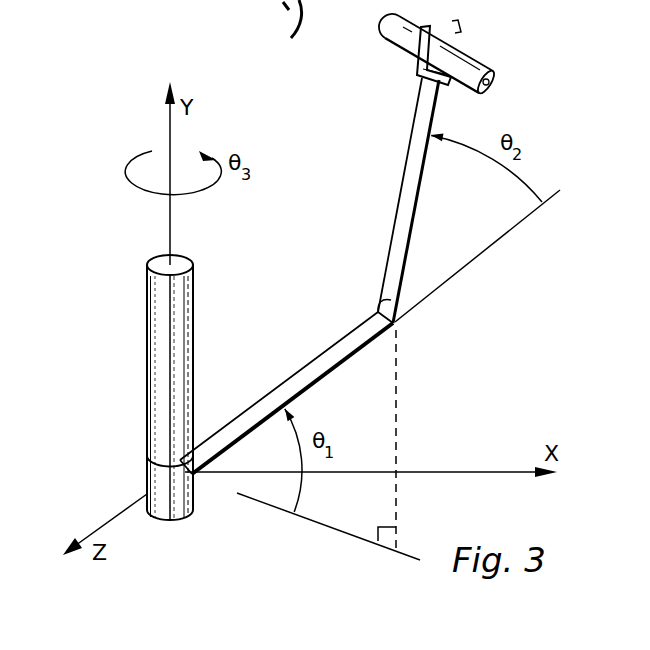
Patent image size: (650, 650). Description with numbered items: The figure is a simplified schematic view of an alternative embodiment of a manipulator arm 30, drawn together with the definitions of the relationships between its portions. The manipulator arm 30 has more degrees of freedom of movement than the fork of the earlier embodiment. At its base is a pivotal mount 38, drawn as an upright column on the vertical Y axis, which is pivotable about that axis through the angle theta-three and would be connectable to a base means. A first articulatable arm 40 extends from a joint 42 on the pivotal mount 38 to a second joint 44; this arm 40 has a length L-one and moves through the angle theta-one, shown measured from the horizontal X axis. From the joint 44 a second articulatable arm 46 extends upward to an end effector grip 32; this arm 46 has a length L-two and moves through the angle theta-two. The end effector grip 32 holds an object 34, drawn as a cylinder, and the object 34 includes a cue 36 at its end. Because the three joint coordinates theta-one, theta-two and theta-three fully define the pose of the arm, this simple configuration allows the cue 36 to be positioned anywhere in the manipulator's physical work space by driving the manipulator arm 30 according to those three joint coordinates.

The manipulator arm 30 is at (128, 349).
The end effector grip 32 is at (416, 60).
The object 34 is at (398, 42).
The cue 36 is at (494, 84).
The pivotal mount 38 is at (153, 378).
The first articulatable arm 40 is at (333, 346).
The joint 42 is at (150, 456).
The joint 44 is at (387, 300).
The second articulatable arm 46 is at (402, 203).